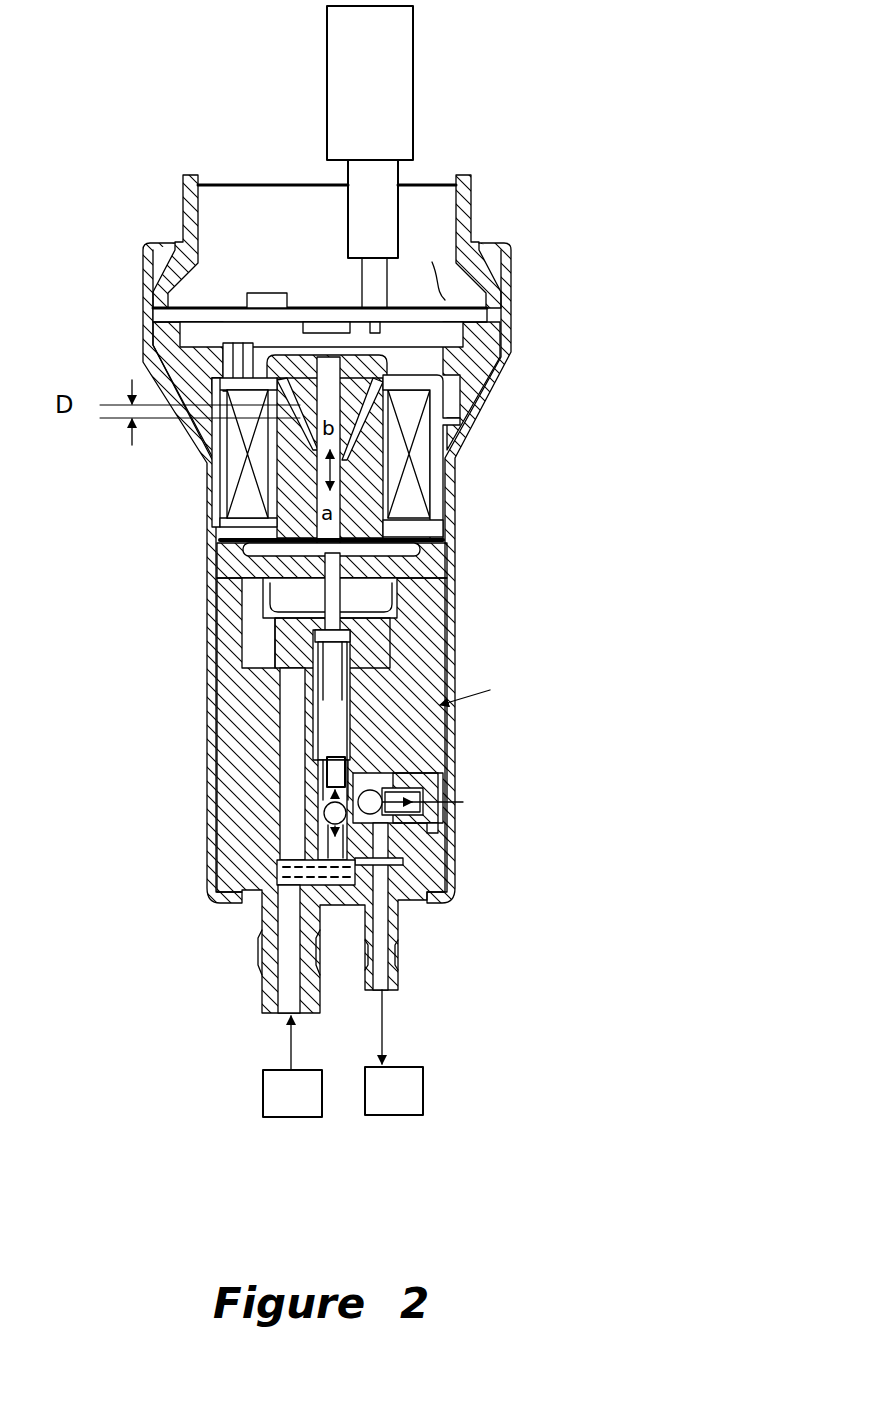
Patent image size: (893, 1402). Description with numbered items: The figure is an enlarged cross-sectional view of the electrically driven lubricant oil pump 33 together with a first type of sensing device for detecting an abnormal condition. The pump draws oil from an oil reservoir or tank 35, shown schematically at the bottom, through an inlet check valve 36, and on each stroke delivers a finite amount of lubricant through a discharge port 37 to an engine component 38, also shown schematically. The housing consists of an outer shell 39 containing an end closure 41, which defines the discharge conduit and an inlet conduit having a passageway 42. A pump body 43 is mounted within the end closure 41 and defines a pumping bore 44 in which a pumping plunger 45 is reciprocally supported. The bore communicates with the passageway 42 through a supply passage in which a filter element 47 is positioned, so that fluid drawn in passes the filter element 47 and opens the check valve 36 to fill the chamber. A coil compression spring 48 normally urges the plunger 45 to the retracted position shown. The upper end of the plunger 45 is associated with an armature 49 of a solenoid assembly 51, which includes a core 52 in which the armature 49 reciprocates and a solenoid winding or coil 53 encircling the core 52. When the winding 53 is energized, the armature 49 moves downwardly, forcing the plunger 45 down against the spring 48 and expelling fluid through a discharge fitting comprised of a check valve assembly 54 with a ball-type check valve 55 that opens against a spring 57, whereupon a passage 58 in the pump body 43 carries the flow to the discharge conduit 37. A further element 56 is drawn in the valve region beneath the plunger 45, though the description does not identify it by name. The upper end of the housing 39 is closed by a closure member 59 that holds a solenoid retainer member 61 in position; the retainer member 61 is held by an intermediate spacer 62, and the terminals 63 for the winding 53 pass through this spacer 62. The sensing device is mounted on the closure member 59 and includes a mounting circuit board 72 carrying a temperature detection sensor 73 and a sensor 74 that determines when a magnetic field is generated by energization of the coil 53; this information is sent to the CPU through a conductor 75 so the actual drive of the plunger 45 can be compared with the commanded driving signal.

The oil pump 33 is at (493, 685).
The oil reservoir or tank 35 is at (263, 1107).
The inlet check valve 36 is at (295, 800).
The discharge port 37 is at (393, 967).
The engine component 38 is at (423, 1088).
The outer shell 39 is at (210, 553).
The end closure 41 is at (252, 900).
The passageway 42 is at (292, 977).
The pump body 43 is at (400, 688).
The pumping bore 44 is at (320, 790).
The pumping plunger 45 is at (395, 628).
The filter element 47 is at (280, 870).
The coil compression spring 48 is at (333, 655).
The armature 49 is at (270, 500).
The solenoid assembly 51 is at (462, 453).
The core 52 is at (370, 498).
The solenoid winding or coil 53 is at (428, 463).
The check valve assembly 54 is at (445, 785).
The ball-type check valve 55 is at (357, 778).
The valve needle 56 is at (325, 770).
The spring 57 is at (382, 812).
The passage 58 is at (385, 847).
The closure member 59 is at (172, 257).
The solenoid retainer member 61 is at (205, 470).
The intermediate spacer 62 is at (478, 347).
The terminals 63 is at (225, 360).
The mounting circuit board 72 is at (428, 264).
The temperature detection sensor 73 is at (266, 293).
The sensor 74 is at (330, 322).
The conductor 75 is at (400, 85).